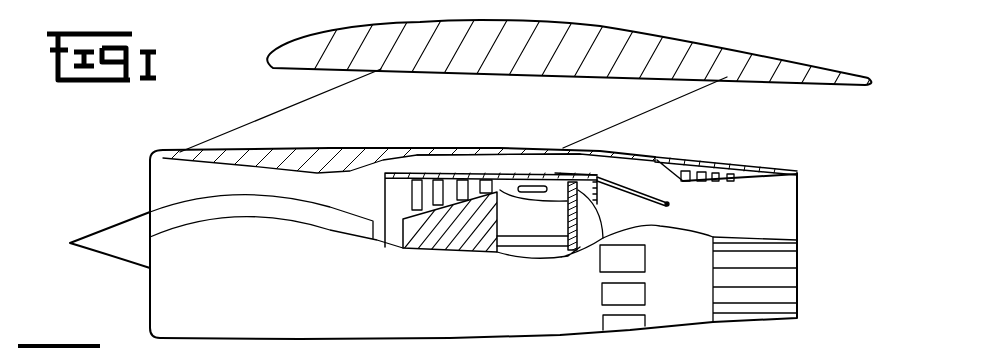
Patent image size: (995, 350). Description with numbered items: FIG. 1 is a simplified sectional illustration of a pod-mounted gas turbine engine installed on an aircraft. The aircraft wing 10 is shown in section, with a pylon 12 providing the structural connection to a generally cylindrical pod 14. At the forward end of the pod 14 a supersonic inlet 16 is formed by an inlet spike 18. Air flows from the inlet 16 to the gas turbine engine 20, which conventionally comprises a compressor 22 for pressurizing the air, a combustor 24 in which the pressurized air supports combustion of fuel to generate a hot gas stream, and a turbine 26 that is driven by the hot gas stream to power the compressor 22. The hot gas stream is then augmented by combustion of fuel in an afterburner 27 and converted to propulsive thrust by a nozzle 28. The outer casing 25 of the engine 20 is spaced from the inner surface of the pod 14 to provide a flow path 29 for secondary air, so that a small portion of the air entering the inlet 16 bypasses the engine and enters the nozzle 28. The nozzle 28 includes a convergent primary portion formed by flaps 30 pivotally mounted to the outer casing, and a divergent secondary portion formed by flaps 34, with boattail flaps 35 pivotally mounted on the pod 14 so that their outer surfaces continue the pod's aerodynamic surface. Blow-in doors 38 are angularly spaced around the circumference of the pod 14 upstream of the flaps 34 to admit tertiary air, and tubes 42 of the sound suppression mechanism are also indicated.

The aircraft wing 10 is at (291, 44).
The pylon 12 is at (283, 112).
The pod 14 is at (257, 149).
The supersonic inlet 16 is at (138, 187).
The inlet spike 18 is at (92, 252).
The gas turbine engine 20 is at (459, 163).
The compressor 22 is at (415, 198).
The combustor 24 is at (536, 186).
The outer casing 25 is at (566, 172).
The turbine 26 is at (567, 205).
The afterburner 27 is at (598, 202).
The nozzle 28 is at (780, 154).
The flow path 29 is at (431, 172).
The flaps 30 is at (657, 203).
The flaps 34 is at (731, 183).
The boattail flaps 35 is at (785, 277).
The blow-in doors 38 is at (648, 156).
The tubes 42 is at (706, 172).